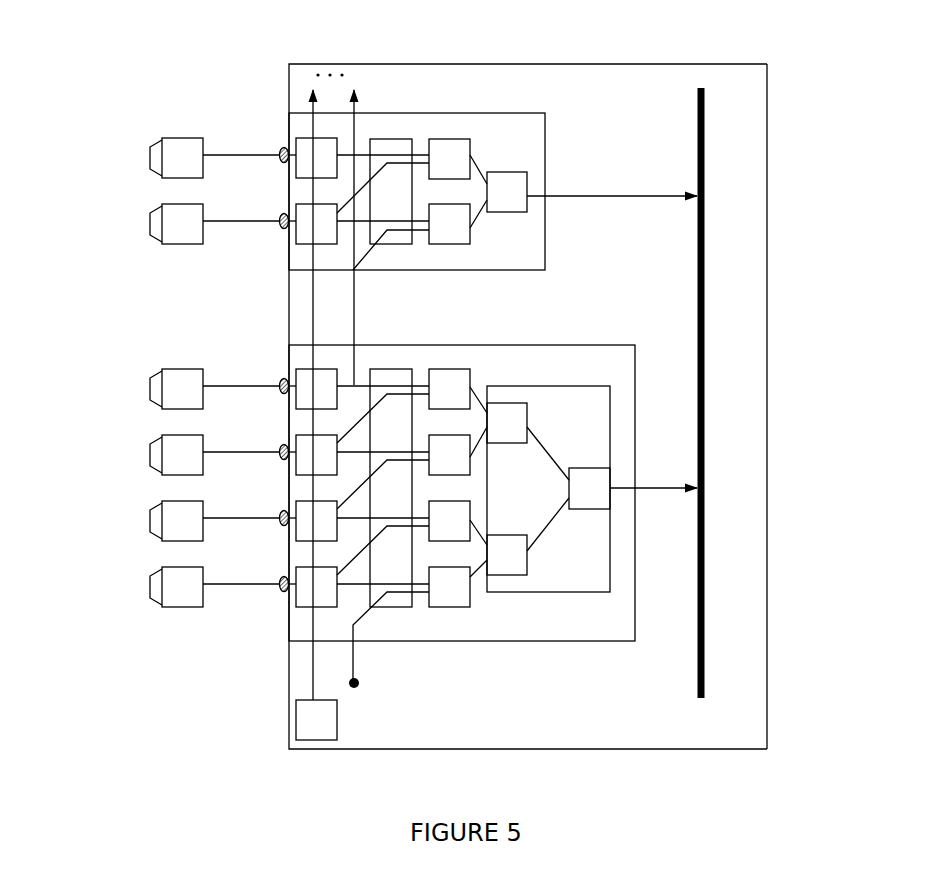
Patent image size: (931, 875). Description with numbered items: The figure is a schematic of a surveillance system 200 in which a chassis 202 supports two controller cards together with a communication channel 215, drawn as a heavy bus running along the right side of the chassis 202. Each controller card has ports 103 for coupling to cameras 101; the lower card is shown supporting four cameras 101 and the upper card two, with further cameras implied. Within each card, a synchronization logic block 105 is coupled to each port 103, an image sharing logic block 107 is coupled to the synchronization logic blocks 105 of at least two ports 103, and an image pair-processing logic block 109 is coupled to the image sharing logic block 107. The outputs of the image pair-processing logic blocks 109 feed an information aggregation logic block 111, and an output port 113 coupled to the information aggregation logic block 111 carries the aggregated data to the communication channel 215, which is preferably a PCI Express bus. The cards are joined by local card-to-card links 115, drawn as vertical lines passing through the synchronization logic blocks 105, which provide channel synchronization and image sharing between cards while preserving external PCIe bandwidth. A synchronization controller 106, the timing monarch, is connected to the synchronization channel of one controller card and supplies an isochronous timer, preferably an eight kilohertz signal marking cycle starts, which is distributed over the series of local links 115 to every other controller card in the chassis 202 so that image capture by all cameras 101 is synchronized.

The surveillance system 200 is at (289, 54).
The chassis 202 is at (768, 155).
The communication channel 215 is at (706, 369).
The local card-to-card link 115 is at (352, 319).
The camera 101 is at (143, 375).
The port 103 is at (279, 594).
The synchronization logic block 105 is at (295, 139).
The image sharing logic block 107 is at (396, 136).
The image pair-processing logic block 109 is at (463, 136).
The information aggregation logic block 111 is at (528, 168).
The output port 113 is at (618, 194).
The synchronization controller 106 is at (296, 734).